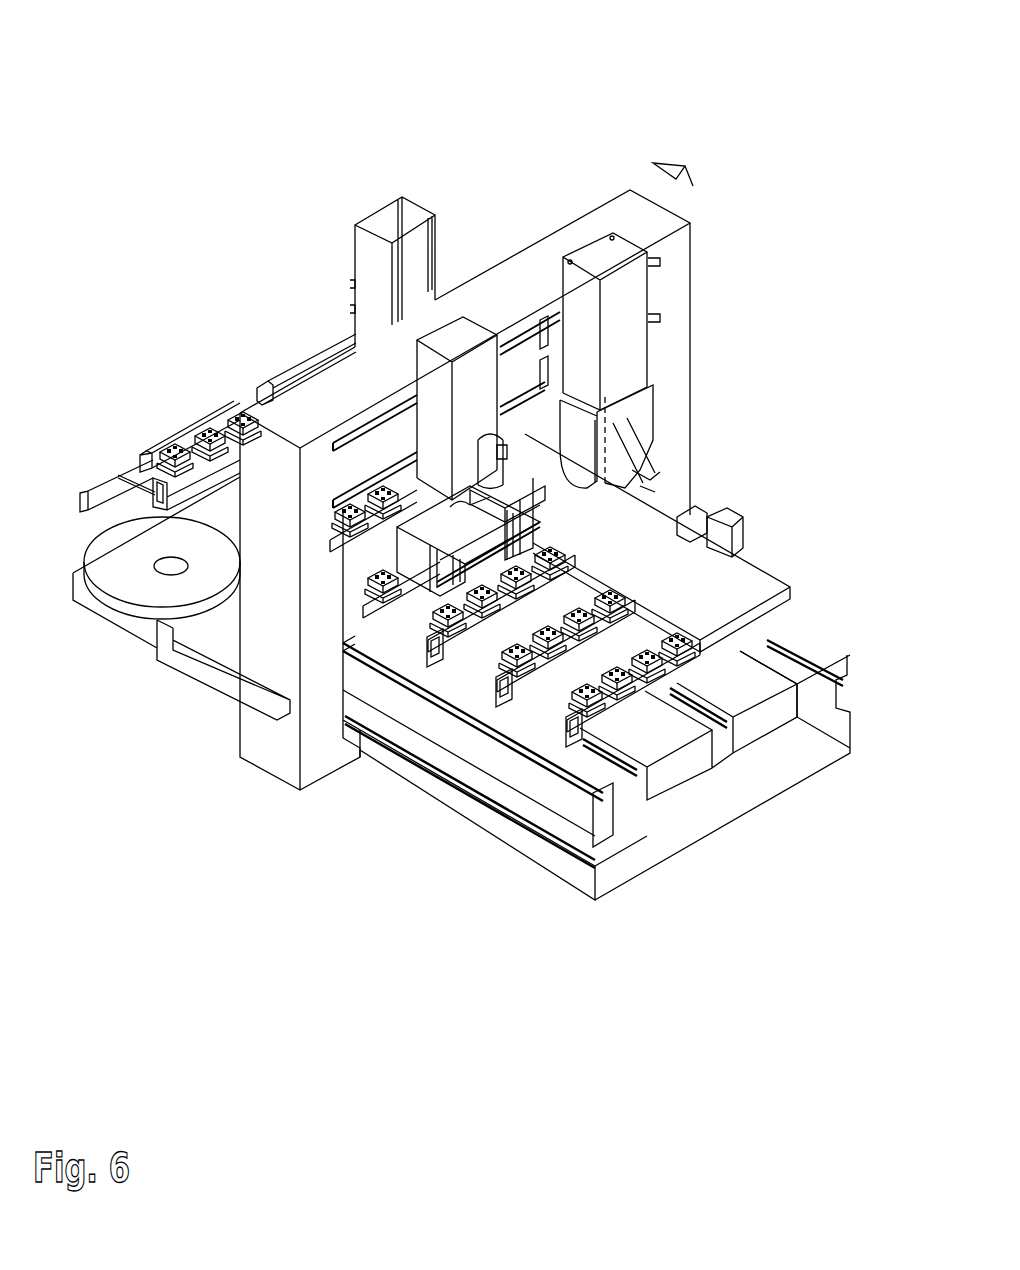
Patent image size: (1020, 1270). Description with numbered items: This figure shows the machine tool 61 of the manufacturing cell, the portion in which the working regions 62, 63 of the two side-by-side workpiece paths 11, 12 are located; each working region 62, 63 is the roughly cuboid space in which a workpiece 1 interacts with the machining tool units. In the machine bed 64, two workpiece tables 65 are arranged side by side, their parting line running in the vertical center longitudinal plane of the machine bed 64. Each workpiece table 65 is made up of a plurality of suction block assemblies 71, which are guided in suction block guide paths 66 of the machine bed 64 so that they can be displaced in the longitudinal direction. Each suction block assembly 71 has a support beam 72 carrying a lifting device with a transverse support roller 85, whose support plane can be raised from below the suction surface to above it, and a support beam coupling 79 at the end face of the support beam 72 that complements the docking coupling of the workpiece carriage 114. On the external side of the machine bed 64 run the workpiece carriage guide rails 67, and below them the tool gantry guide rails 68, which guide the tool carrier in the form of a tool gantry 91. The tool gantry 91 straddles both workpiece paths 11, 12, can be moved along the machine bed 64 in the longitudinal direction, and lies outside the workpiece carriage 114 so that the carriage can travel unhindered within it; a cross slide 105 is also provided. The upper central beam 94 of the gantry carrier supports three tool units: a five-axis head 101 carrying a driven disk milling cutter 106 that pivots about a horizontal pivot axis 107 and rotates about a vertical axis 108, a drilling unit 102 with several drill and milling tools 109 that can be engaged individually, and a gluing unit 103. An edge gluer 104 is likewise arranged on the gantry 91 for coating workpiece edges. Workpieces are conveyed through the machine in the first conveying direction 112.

The first workpiece 1 is at (673, 580).
The first workpiece path 11 is at (748, 643).
The second workpiece path 12 is at (633, 708).
The machine tool 61 is at (185, 380).
The working region 62 is at (625, 510).
The working region 63 is at (360, 755).
The machine bed 64 is at (632, 842).
The workpiece table 65 is at (220, 420).
The suction block guide paths 66 is at (800, 660).
The workpiece carriage guide rails 67 is at (522, 700).
The tool gantry guide rails 68 is at (595, 890).
The suction block assembly 71 is at (533, 707).
The support beam 72 is at (513, 710).
The support beam coupling 79 is at (430, 640).
The support roller 85 is at (407, 623).
The tool gantry 91 is at (278, 410).
The central beam 94 is at (473, 300).
The 5-axis head 101 is at (612, 315).
The drilling unit 102 is at (493, 427).
The gluing unit 103 is at (363, 273).
The edge gluer 104 is at (147, 587).
The cross slide 105 is at (548, 300).
The disk milling cutter 106 is at (645, 483).
The pivot axis 107 is at (627, 435).
The vertical axis 108 is at (577, 463).
The drill and milling tools 109 is at (387, 623).
The first conveying direction 112 is at (690, 183).
The workpiece carriage 114 is at (723, 533).